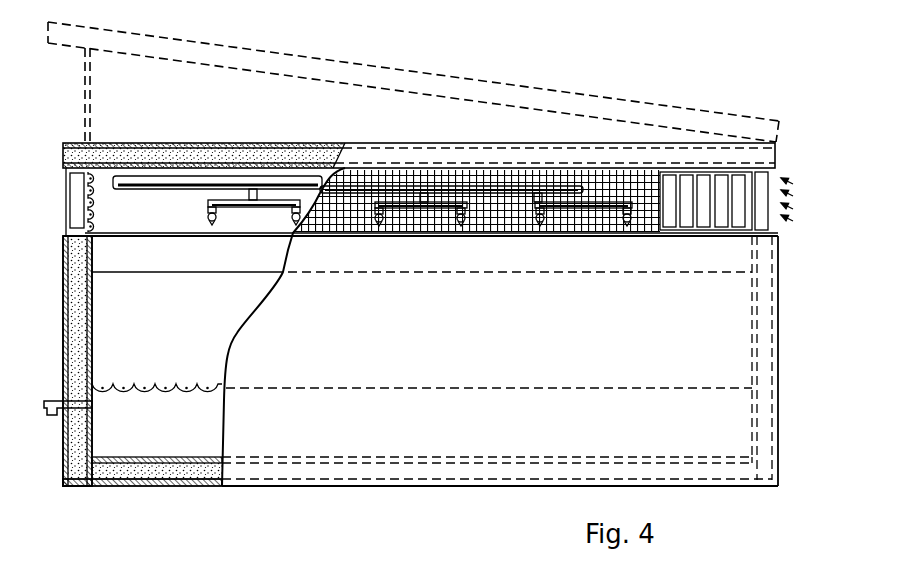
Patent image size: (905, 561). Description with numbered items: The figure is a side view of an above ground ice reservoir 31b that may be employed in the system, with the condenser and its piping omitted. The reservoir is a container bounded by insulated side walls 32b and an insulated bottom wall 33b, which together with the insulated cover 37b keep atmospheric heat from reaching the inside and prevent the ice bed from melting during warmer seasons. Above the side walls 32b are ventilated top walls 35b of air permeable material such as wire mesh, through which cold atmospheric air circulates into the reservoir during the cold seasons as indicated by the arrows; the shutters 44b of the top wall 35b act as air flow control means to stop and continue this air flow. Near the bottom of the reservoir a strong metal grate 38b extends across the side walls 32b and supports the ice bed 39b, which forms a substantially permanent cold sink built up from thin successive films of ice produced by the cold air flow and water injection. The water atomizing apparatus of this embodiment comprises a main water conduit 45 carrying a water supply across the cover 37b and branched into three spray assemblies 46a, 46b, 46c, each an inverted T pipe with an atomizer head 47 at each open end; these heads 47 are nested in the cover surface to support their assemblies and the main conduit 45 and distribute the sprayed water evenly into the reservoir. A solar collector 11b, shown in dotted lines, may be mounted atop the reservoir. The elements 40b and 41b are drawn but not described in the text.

The solar collector 11b is at (536, 74).
The above ground ice reservoir 31b is at (220, 83).
The insulated side walls 32b is at (68, 335).
The insulated bottom wall 33b is at (192, 487).
The ventilated top walls 35b is at (92, 196).
The insulated cover 37b is at (100, 148).
The grate 38b is at (172, 385).
The ice bed 39b is at (198, 312).
The heating tray 40b is at (160, 457).
The inlet fitting 41b is at (93, 406).
The shutters 44b is at (705, 227).
The main water conduit 45 is at (148, 189).
The spray assembly 46a is at (254, 208).
The spray assembly 46b is at (405, 208).
The spray assembly 46c is at (587, 208).
The atomizer head 47 is at (210, 223).